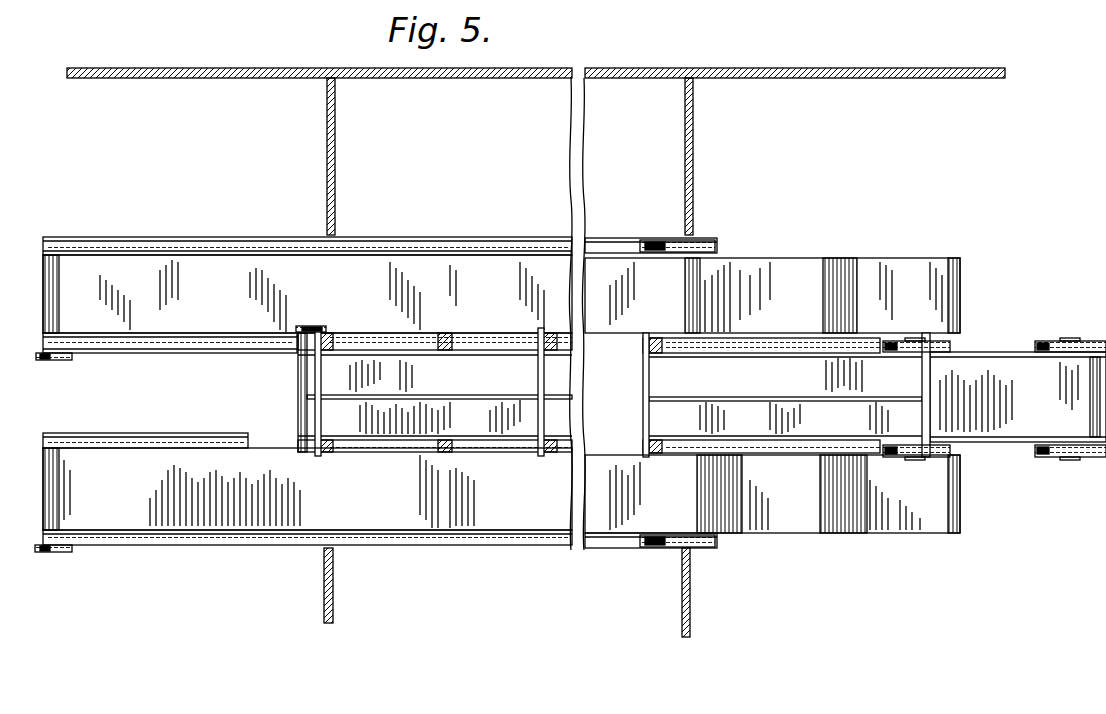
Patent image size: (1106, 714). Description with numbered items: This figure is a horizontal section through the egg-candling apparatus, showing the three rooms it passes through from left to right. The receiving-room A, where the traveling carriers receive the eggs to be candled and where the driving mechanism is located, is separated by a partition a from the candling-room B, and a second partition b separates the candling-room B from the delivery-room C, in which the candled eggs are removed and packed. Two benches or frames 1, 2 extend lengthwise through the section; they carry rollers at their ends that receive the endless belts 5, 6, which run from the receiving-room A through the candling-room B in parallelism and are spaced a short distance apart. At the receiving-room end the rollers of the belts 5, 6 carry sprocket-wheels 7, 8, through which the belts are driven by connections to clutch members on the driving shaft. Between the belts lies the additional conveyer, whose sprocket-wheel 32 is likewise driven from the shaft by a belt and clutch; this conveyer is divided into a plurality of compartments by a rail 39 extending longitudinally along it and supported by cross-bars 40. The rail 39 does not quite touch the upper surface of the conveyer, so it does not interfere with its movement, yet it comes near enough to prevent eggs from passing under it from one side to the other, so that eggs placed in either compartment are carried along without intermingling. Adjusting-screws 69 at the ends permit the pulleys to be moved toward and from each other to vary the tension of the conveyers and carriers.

The bench or frame 1 is at (470, 248).
The bench or frame 2 is at (548, 538).
The endless belt 5 is at (501, 294).
The endless belt 6 is at (501, 483).
The sprocket-wheel 7 is at (66, 361).
The sprocket-wheel 8 is at (65, 552).
The sprocket-wheel 32 is at (318, 320).
The rail 39 is at (458, 400).
The cross-bars 40 is at (321, 380).
The adjusting-screws 69 is at (893, 341).
The partition a is at (336, 158).
The partition b is at (693, 165).
The receiving-room A is at (223, 159).
The candling-room B is at (489, 159).
The delivery-room C is at (819, 163).